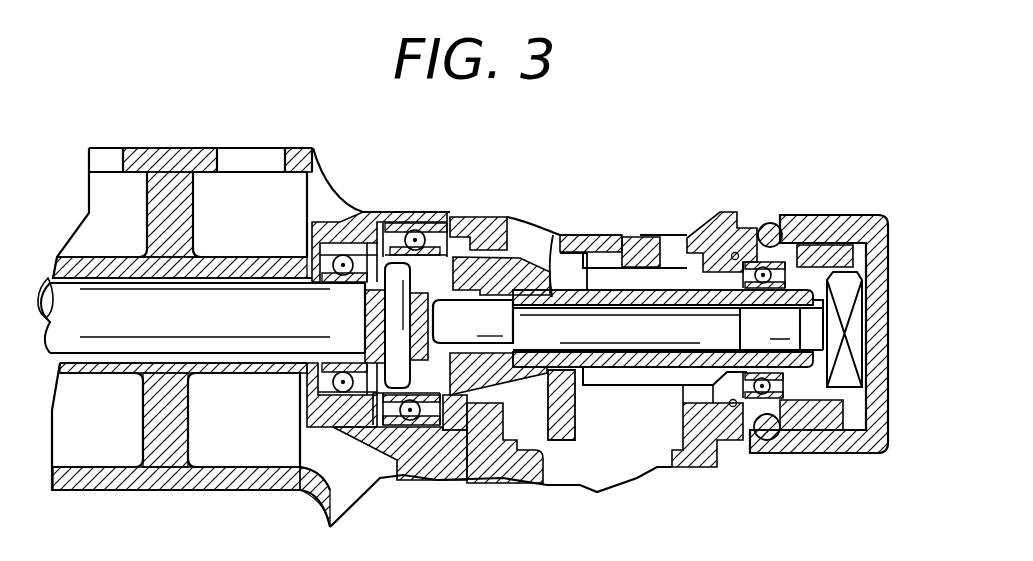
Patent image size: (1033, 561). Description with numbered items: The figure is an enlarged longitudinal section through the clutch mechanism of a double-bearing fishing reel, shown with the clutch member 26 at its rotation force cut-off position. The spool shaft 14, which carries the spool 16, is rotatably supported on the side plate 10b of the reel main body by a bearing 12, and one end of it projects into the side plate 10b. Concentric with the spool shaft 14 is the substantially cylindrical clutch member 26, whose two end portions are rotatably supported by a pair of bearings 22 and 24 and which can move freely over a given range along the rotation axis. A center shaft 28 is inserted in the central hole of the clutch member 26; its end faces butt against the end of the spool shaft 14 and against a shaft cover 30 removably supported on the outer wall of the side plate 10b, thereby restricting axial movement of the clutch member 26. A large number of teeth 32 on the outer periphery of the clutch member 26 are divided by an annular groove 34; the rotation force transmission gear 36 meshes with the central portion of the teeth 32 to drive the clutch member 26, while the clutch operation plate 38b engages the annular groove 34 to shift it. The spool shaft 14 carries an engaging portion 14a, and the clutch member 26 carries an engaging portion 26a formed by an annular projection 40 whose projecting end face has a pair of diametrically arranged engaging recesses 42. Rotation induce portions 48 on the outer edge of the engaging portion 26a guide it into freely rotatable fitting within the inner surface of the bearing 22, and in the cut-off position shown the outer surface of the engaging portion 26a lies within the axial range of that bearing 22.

The side plate 10b is at (352, 207).
The bearing 12 is at (307, 400).
The spool shaft 14 is at (257, 293).
The engaging portion 14a is at (383, 332).
The spool 16 is at (314, 150).
The bearing 22 is at (432, 227).
The bearing 24 is at (787, 227).
The clutch member 26 is at (613, 368).
The engaging portion 26a is at (508, 395).
The center shaft 28 is at (670, 320).
The shaft cover 30 is at (850, 216).
The teeth 32 is at (655, 387).
The annular groove 34 is at (557, 287).
The rotation force transmission gear 36 is at (633, 239).
The clutch operation plate 38b is at (572, 420).
The annular projection 40 is at (473, 372).
The engaging recesses 42 is at (447, 265).
The rotation induce portions 48 is at (410, 390).